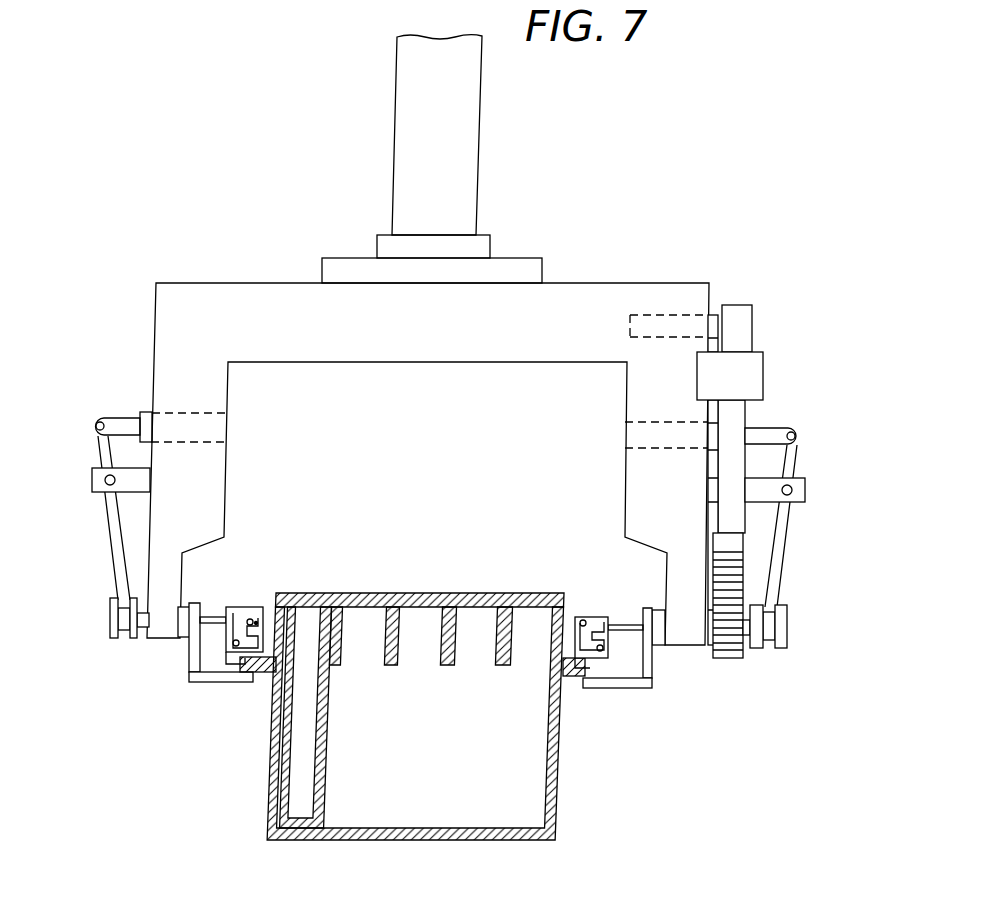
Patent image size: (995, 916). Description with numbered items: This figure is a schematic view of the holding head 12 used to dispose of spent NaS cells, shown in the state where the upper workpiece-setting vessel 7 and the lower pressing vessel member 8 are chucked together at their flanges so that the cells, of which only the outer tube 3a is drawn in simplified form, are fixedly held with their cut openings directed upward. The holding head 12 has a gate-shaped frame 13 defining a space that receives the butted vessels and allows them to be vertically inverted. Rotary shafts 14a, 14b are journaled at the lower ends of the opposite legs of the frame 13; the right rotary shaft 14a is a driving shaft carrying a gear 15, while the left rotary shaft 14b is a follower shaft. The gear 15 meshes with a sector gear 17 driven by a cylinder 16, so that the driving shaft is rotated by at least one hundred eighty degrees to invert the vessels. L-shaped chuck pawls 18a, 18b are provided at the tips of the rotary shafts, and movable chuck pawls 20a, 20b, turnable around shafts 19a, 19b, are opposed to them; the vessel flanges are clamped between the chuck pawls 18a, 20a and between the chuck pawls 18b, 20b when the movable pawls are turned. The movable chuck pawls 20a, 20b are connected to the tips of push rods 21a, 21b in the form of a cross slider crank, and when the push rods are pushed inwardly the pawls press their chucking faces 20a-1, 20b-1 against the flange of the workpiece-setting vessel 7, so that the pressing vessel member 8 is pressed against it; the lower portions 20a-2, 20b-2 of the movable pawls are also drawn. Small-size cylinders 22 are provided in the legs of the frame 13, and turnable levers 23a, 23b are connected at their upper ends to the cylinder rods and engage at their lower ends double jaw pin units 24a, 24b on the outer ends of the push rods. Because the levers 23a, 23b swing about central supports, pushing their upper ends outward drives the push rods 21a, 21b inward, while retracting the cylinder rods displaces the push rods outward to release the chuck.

The outer tube 3a is at (327, 753).
The workpiece-setting vessel 7 is at (410, 592).
The pressing vessel member 8 is at (270, 775).
The holding head 12 is at (609, 283).
The gate-shaped frame 13 is at (270, 290).
The rotary shaft 14a is at (712, 636).
The rotary shaft 14b is at (183, 630).
The gear 15 is at (730, 660).
The cylinder 16 is at (756, 376).
The sector gear 17 is at (746, 543).
The chuck pawl 18a is at (626, 690).
The chuck pawl 18b is at (234, 682).
The shaft 19a is at (603, 620).
The shaft 19b is at (243, 620).
The movable chuck pawl 20a is at (598, 617).
The movable chuck pawl 20b is at (233, 616).
The chucking face 20a-1 is at (618, 648).
The latch base 20a-2 is at (590, 688).
The chucking face 20b-1 is at (227, 632).
The latch base 20b-2 is at (235, 656).
The push rod 21a is at (612, 630).
The push rod 21b is at (222, 614).
The small-size cylinder 22 is at (183, 410).
The turnable lever 23a is at (797, 458).
The turnable lever 23b is at (98, 443).
The double jaw pin unit 24a is at (788, 622).
The double jaw pin unit 24b is at (108, 622).